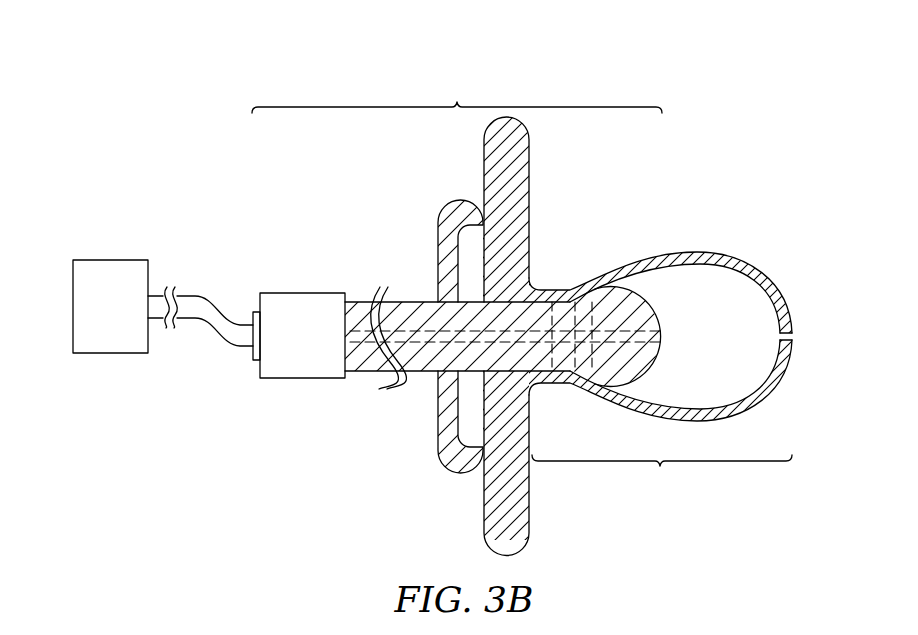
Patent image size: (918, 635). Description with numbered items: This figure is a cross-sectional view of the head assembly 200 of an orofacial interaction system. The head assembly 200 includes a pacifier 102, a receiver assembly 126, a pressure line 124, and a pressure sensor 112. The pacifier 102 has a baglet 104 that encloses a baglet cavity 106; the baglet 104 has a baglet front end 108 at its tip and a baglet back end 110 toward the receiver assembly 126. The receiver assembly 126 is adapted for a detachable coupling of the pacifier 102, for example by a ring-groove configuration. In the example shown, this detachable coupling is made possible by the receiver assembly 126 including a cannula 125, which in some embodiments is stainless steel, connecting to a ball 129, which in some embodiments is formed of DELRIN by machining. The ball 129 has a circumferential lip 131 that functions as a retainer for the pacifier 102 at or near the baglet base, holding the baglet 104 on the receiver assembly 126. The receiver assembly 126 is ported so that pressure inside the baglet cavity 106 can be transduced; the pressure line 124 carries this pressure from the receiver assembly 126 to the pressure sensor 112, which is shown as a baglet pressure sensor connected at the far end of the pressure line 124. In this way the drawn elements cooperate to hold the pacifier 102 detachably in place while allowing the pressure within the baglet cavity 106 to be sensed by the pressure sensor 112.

The head assembly 200 is at (150, 82).
The pressure sensor 112 is at (110, 260).
The pressure line 124 is at (228, 341).
The cannula 125 is at (360, 302).
The receiver assembly 126 is at (457, 103).
The baglet back end 110 is at (418, 438).
The pacifier 102 is at (660, 464).
The baglet 104 is at (709, 252).
The baglet cavity 106 is at (755, 386).
The baglet front end 108 is at (810, 328).
The ball 129 is at (638, 288).
The circumferential lip 131 is at (603, 298).